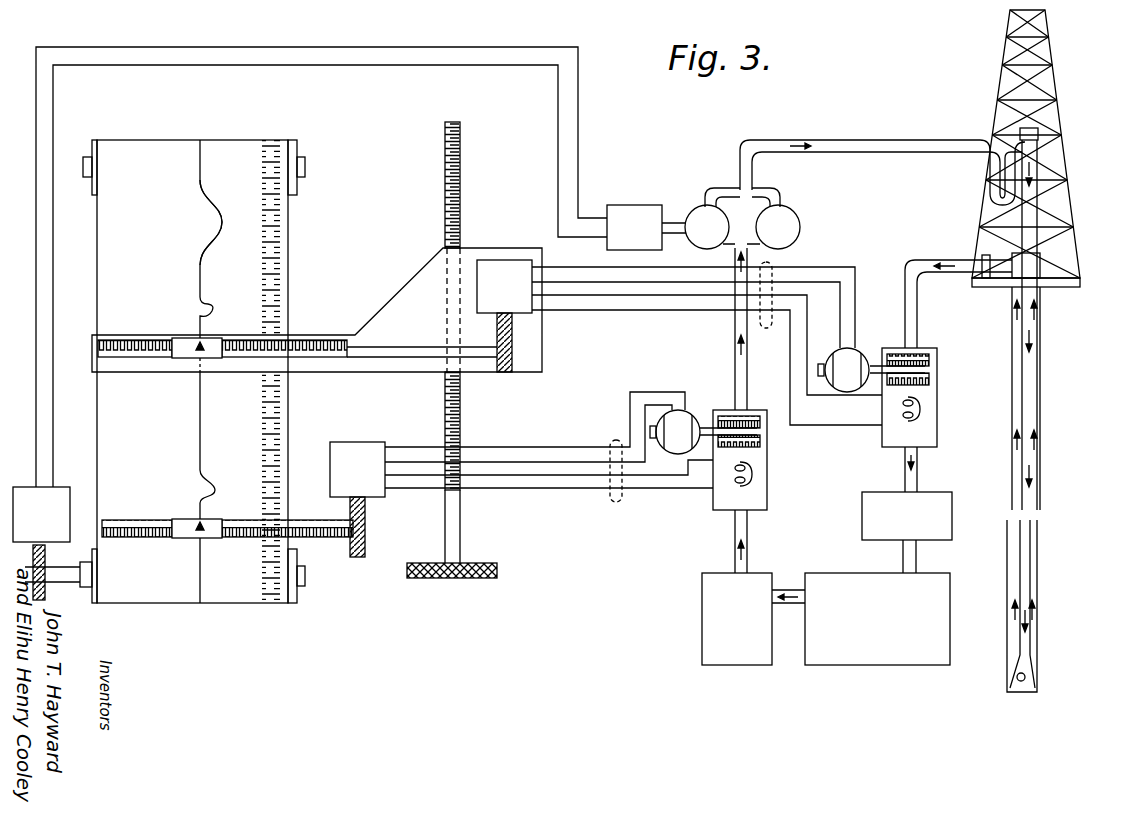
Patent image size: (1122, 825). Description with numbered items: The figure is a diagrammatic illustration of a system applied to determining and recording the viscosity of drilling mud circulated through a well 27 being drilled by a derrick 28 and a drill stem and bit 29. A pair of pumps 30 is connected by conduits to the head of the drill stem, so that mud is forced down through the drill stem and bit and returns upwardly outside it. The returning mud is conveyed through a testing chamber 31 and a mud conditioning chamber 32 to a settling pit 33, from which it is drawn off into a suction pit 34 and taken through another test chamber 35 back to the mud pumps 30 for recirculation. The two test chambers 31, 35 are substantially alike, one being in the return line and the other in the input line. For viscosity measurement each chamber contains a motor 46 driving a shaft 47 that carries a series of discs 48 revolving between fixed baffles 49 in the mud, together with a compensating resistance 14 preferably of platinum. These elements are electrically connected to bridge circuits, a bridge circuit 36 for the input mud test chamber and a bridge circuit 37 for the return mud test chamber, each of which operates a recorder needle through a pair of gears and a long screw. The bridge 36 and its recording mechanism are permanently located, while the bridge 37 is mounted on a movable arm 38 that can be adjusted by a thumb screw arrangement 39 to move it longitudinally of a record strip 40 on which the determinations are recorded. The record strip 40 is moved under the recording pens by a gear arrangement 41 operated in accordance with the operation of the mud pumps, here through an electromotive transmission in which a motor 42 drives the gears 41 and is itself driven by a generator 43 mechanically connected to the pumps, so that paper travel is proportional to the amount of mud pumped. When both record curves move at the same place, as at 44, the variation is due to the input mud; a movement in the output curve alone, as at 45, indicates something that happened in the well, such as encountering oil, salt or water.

The compensating resistance 14 is at (750, 503).
The well 27 is at (1041, 394).
The derrick 28 is at (1062, 141).
The drill stem and bit 29 is at (1027, 585).
The mud pumps 30 is at (700, 207).
The testing chamber 31 is at (947, 407).
The mud conditioning chamber 32 is at (953, 524).
The settling pit 33 is at (952, 610).
The suction pit 34 is at (705, 604).
The test chamber 35 is at (779, 496).
The bridge circuit 36 is at (372, 450).
The bridge circuit 37 is at (510, 262).
The movable arm 38 is at (388, 302).
The thumb screw arrangement 39 is at (492, 566).
The record strip 40 is at (284, 242).
The gear arrangement 41 is at (48, 568).
The motor 42 is at (52, 497).
The generator 43 is at (636, 210).
The record movement 44 is at (214, 310).
The output curve movement 45 is at (219, 220).
The motor 46 is at (684, 424).
The shaft 47 is at (765, 431).
The discs 48 is at (745, 425).
The fixed baffles 49 is at (755, 447).